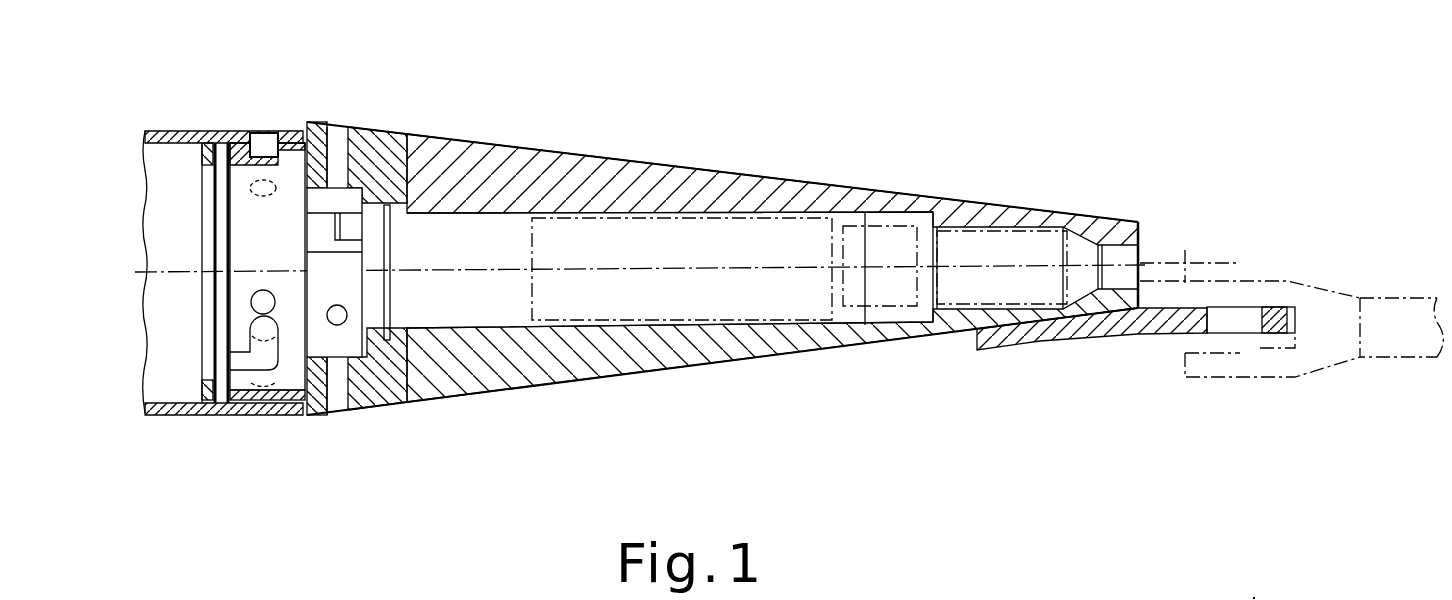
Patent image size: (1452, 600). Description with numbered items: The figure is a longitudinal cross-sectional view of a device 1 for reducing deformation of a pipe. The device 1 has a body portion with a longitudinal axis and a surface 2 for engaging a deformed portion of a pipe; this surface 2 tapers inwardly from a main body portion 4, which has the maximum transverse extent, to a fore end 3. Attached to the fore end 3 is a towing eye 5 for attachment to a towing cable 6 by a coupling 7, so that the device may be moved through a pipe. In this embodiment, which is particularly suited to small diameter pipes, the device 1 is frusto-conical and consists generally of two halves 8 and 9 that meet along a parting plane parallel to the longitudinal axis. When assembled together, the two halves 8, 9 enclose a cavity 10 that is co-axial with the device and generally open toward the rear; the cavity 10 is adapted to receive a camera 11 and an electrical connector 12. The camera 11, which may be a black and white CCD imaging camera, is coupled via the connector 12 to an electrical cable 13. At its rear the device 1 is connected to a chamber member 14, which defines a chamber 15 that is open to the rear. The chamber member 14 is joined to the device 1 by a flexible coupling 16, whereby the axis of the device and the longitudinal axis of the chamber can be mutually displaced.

The device 1 is at (703, 368).
The surface 2 is at (558, 155).
The fore end 3 is at (1140, 238).
The main body portion 4 is at (313, 418).
The towing eye 5 is at (1157, 333).
The towing cable 6 is at (1393, 357).
The coupling 7 is at (1240, 347).
The half 8 is at (482, 378).
The half 9 is at (472, 165).
The cavity 10 is at (473, 317).
The camera 11 is at (718, 205).
The electrical connector 12 is at (975, 233).
The electrical cable 13 is at (1185, 250).
The chamber member 14 is at (150, 415).
The chamber 15 is at (172, 157).
The flexible coupling 16 is at (267, 133).